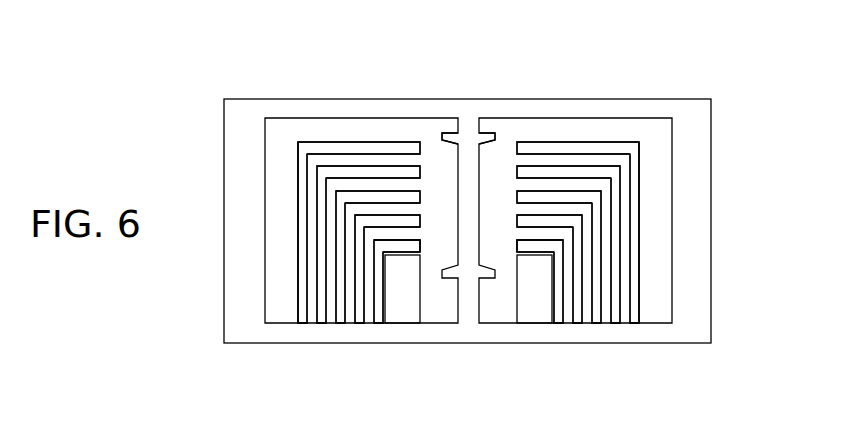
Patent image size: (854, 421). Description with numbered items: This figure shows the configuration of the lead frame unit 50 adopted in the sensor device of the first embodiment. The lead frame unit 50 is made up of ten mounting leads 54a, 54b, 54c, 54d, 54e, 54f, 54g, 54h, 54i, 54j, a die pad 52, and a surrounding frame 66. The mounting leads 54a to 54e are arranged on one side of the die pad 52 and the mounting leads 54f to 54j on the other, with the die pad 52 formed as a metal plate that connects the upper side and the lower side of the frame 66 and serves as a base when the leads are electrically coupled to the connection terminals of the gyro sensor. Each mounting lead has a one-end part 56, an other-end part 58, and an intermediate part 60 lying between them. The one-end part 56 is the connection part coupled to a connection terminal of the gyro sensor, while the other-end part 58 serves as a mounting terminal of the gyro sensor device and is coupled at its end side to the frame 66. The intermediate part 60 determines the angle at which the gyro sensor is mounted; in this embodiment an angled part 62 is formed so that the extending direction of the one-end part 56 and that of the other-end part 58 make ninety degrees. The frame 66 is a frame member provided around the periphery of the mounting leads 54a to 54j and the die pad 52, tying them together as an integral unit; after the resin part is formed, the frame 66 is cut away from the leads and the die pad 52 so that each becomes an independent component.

The lead frame unit 50 is at (543, 87).
The die pad 52 is at (479, 158).
The mounting lead 54a is at (347, 141).
The mounting lead 54b is at (368, 165).
The mounting lead 54c is at (335, 225).
The mounting lead 54d is at (354, 253).
The mounting lead 54e is at (391, 289).
The mounting lead 54f is at (566, 141).
The mounting lead 54g is at (593, 165).
The mounting lead 54h is at (603, 232).
The mounting lead 54i is at (584, 278).
The mounting lead 54j is at (547, 289).
The one-end part 56 is at (401, 147).
The other-end part 58 is at (303, 290).
The intermediate part 60 is at (320, 147).
The angled part 62 is at (632, 152).
The frame 66 is at (690, 310).